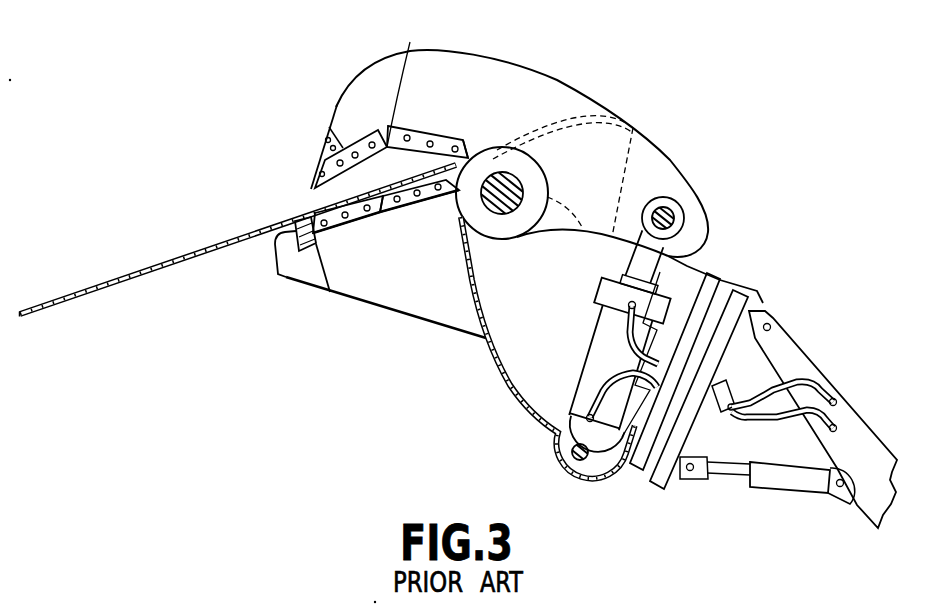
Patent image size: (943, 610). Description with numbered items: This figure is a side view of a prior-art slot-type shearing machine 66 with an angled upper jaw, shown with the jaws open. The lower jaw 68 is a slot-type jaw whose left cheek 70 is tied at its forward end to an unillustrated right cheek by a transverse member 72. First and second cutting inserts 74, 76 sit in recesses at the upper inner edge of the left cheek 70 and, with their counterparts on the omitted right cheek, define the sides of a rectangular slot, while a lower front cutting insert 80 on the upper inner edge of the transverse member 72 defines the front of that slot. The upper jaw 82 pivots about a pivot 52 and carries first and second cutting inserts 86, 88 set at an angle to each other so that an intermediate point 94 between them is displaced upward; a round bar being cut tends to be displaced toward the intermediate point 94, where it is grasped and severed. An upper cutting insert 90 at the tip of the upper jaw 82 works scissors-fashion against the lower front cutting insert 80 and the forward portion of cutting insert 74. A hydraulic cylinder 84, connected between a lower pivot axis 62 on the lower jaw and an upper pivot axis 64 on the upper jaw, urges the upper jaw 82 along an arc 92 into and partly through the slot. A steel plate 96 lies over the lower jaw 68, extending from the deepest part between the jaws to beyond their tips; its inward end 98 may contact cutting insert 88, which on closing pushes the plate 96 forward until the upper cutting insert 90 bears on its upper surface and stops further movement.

The pivot 52 is at (498, 212).
The lower pivot axis 62 is at (572, 452).
The upper pivot axis 64 is at (684, 207).
The shearing machine 66 is at (639, 89).
The lower jaw 68 is at (407, 306).
The left cheek 70 is at (364, 288).
The transverse member 72 is at (285, 279).
The first cutting insert 74 is at (337, 229).
The second cutting insert 76 is at (408, 204).
The lower front cutting insert 80 is at (297, 240).
The upper jaw 82 is at (441, 50).
The hydraulic cylinder 84 is at (586, 357).
The first cutting insert 86 is at (362, 138).
The second cutting insert 88 is at (418, 132).
The upper cutting insert 90 is at (316, 148).
The arc 92 is at (337, 68).
The intermediate point 94 is at (406, 81).
The steel plate 96 is at (302, 211).
The inward end 98 is at (468, 140).